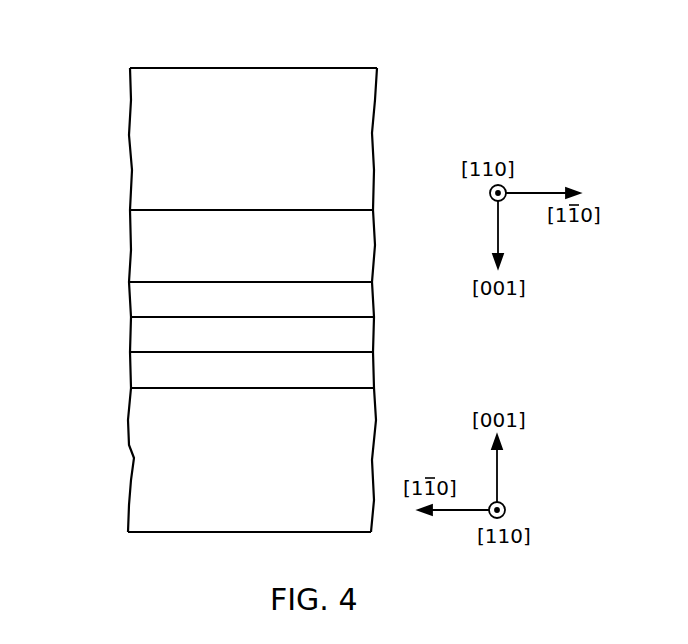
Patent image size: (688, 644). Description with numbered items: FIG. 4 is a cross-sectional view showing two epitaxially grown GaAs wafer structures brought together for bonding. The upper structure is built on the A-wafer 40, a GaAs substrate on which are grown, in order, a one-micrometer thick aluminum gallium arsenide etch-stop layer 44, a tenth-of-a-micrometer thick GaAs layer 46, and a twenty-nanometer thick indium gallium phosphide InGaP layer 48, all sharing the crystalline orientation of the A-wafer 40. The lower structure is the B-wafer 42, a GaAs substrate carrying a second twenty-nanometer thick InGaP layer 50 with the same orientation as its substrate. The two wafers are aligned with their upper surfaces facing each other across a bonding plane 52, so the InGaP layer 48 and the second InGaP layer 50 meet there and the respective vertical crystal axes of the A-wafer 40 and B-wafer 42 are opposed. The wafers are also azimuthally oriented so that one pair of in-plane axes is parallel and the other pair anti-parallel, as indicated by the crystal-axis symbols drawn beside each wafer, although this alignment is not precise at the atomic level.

The A-wafer 40 is at (141, 134).
The B-wafer 42 is at (138, 456).
The etch-stop layer 44 is at (141, 244).
The GaAs layer 46 is at (141, 299).
The InGaP layer 48 is at (141, 334).
The second InGaP layer 50 is at (141, 371).
The bonding plane 52 is at (348, 352).